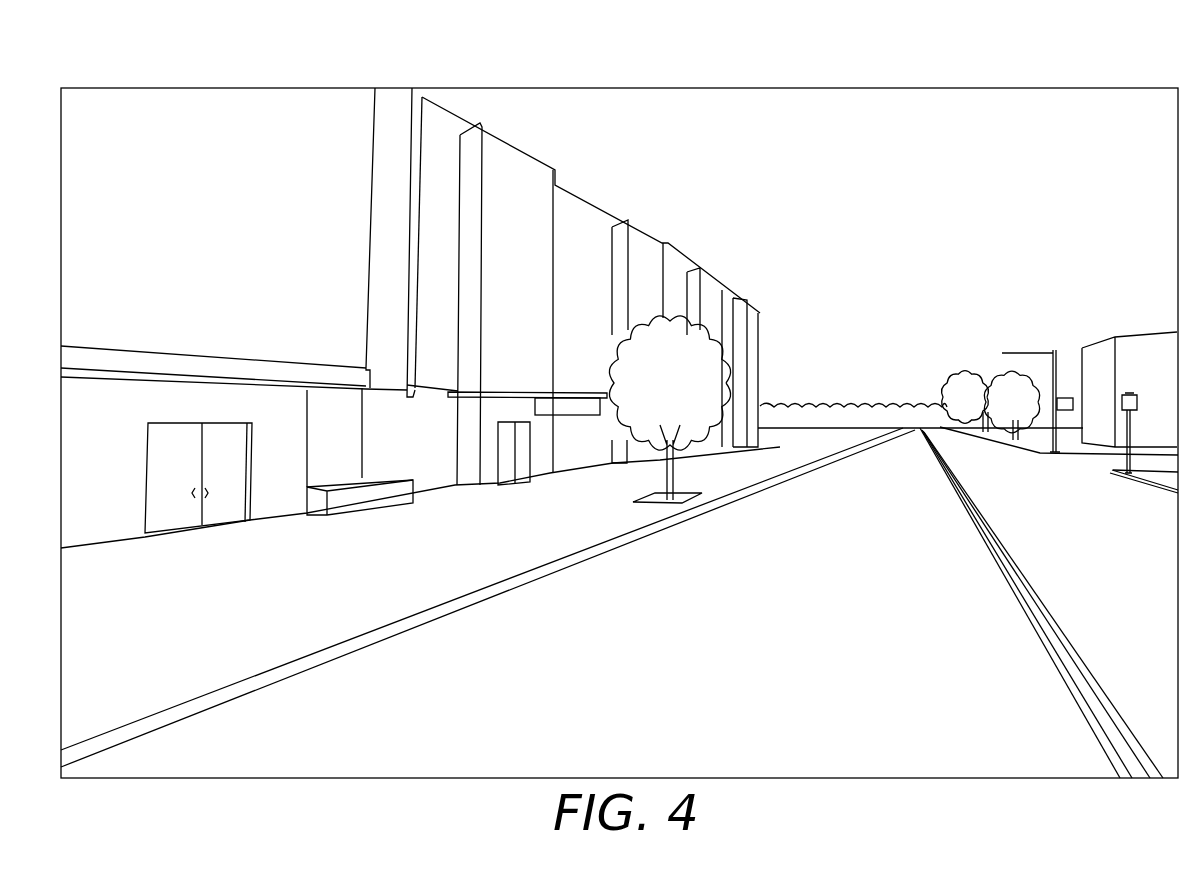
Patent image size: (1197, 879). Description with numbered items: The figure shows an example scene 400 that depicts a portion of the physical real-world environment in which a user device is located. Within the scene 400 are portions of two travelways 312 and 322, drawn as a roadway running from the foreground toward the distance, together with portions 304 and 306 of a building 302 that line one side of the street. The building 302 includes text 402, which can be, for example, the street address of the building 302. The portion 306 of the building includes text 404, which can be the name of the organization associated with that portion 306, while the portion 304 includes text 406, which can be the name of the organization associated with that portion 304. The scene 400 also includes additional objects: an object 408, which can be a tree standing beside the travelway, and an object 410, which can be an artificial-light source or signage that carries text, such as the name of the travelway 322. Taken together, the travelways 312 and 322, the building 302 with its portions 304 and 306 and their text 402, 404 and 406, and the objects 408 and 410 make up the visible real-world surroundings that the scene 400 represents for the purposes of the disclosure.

The scene 400 is at (170, 48).
The building 302 is at (570, 190).
The portion of building 304 is at (498, 462).
The portion of building 306 is at (148, 455).
The travelway 312 is at (407, 650).
The travelway 322 is at (1114, 463).
The text 402 is at (273, 408).
The text 404 is at (342, 438).
The text 406 is at (573, 397).
The object 408 is at (730, 345).
The object 410 is at (1072, 400).